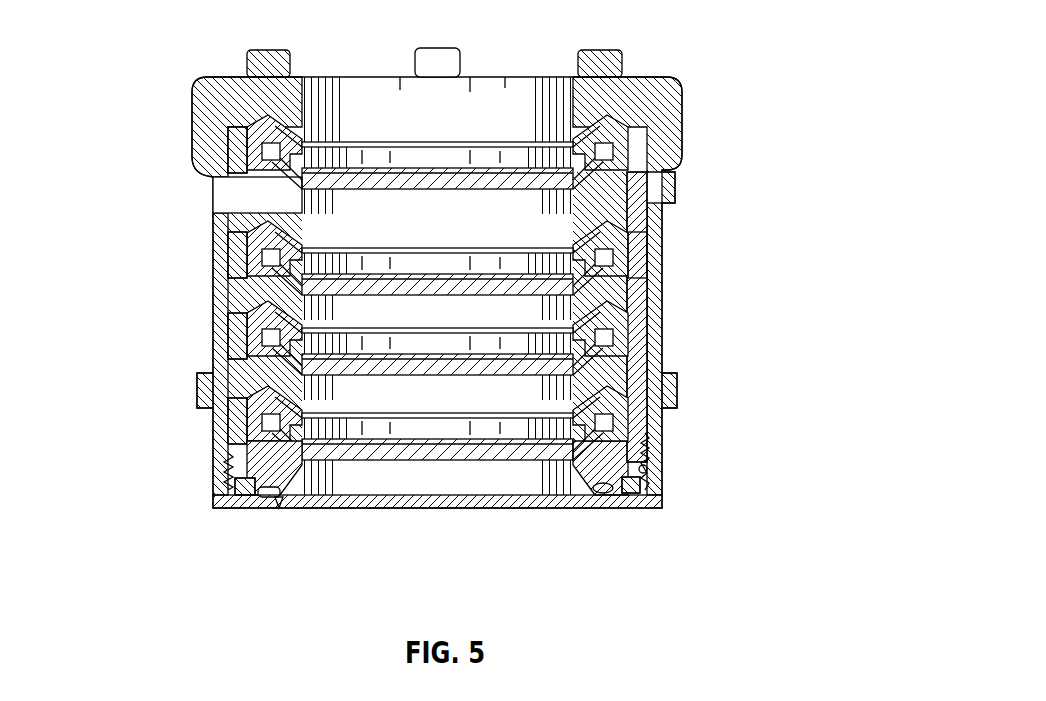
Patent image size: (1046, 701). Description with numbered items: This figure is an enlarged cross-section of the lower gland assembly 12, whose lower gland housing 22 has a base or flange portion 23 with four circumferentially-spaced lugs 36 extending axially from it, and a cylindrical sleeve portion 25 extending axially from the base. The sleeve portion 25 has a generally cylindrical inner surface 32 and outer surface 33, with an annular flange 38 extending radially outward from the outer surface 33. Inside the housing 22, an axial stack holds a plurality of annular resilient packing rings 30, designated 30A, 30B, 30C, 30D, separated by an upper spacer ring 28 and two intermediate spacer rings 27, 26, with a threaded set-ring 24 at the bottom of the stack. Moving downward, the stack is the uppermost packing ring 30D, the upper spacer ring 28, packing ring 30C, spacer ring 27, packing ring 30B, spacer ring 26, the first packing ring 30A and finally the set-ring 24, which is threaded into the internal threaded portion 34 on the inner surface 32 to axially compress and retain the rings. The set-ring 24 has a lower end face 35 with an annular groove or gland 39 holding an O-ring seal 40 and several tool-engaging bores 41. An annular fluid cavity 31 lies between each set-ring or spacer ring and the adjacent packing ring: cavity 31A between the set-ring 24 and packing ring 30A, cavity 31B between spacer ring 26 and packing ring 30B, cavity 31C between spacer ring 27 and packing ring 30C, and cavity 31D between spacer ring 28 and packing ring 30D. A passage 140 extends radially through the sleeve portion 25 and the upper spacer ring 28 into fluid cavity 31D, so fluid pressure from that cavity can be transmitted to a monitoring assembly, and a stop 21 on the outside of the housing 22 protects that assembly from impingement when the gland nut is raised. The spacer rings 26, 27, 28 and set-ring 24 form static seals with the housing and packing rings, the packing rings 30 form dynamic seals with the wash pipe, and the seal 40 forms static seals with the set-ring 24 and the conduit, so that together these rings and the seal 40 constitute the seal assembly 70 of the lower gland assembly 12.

The lower gland assembly 12 is at (772, 79).
The stop 21 is at (676, 188).
The lower gland housing 22 is at (655, 240).
The base or flange portion 23 is at (645, 80).
The threaded set-ring 24 is at (228, 465).
The cylindrical sleeve portion 25 is at (650, 325).
The intermediate spacer ring 26 is at (235, 352).
The intermediate spacer ring 27 is at (235, 275).
The upper spacer ring 28 is at (225, 142).
The annular resilient packing rings 30 is at (354, 241).
The first annular resilient packing ring 30A is at (240, 398).
The packing ring 30B is at (250, 313).
The packing ring 30C is at (250, 232).
The uppermost packing ring 30D is at (235, 82).
The annular fluid cavities 31 is at (437, 317).
The annular fluid cavity 31A is at (305, 430).
The annular fluid cavity 31B is at (305, 350).
The annular fluid cavity 31C is at (350, 246).
The annular fluid cavity 31D is at (345, 140).
The cylindrical inner surface 32 is at (238, 430).
The cylindrical outer surface 33 is at (498, 77).
The internal threaded portion 34 is at (648, 470).
The lower end face 35 is at (582, 506).
The lugs 36 is at (268, 50).
The annular flange 38 is at (672, 378).
The annular groove or gland 39 is at (285, 500).
The O-ring seal 40 is at (267, 498).
The tool-engaging bores 41 is at (235, 490).
The seal assembly 70 is at (280, 508).
The passage 140 is at (227, 203).